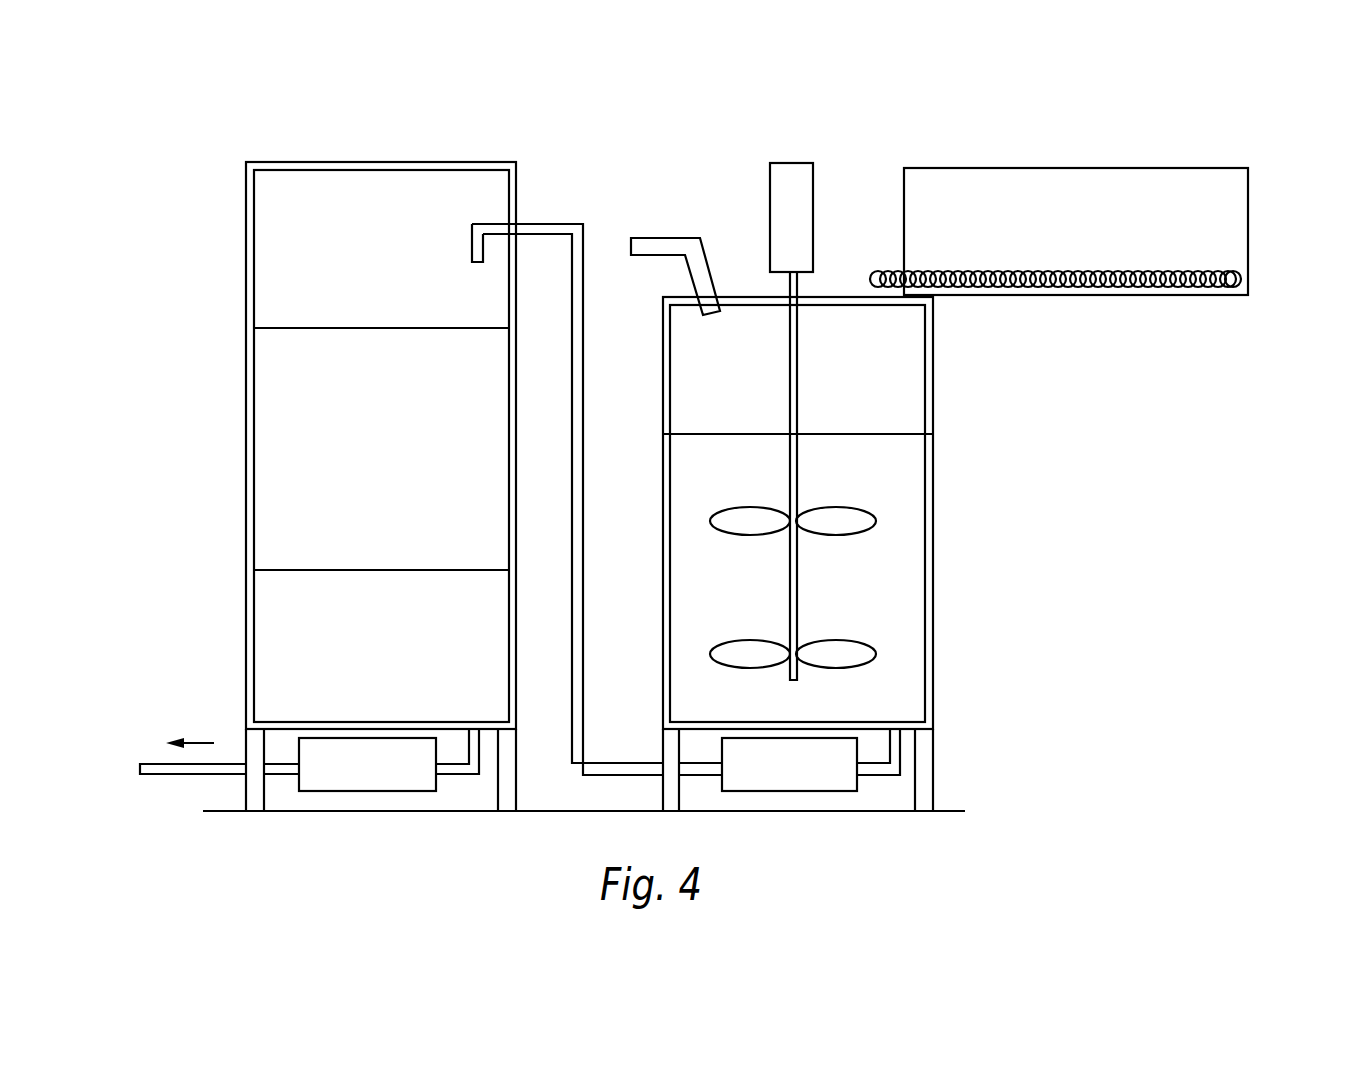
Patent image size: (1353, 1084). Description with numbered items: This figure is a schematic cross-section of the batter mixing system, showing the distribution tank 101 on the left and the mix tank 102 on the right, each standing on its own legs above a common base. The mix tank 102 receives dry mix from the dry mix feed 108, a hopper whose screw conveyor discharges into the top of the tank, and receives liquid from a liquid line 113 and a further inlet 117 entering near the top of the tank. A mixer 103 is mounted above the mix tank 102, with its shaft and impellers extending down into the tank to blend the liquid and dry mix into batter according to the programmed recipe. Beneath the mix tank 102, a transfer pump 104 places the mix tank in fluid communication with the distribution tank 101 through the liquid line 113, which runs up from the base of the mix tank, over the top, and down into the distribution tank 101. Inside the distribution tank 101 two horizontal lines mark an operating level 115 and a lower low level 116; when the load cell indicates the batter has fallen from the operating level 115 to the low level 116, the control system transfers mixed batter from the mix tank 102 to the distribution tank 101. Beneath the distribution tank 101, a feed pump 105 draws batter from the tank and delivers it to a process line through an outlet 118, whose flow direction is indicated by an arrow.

The distribution tank 101 is at (315, 162).
The mix tank 102 is at (908, 393).
The mixer 103 is at (813, 183).
The transfer pump 104 is at (802, 777).
The feed pump 105 is at (373, 777).
The dry mix feed 108 is at (1193, 178).
The liquid line 113 is at (550, 225).
The operating level 115 is at (300, 328).
The low level 116 is at (298, 570).
The inlet nozzle 117 is at (675, 238).
The outlet pipe 118 is at (162, 777).